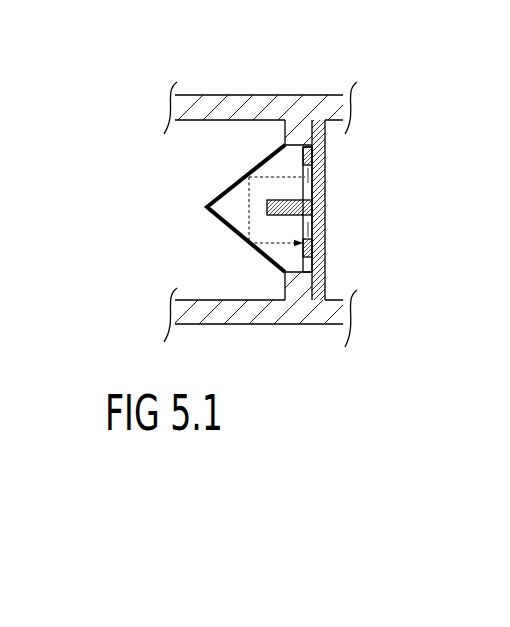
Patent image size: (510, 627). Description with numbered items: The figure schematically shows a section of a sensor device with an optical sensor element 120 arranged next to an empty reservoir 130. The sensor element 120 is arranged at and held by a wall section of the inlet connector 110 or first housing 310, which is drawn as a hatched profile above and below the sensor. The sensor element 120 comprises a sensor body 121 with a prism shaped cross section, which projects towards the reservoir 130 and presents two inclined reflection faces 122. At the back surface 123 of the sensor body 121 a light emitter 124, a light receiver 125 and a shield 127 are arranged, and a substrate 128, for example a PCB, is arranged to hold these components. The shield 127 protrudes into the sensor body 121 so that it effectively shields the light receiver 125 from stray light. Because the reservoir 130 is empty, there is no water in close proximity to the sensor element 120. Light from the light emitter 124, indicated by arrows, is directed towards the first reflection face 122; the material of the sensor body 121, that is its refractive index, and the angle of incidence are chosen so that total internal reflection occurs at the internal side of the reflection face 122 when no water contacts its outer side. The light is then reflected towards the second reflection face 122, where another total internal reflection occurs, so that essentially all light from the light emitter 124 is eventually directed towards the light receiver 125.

The inlet connector 110 is at (260, 77).
The first housing 310 is at (228, 86).
The optical sensor element 120 is at (255, 183).
The sensor body 121 is at (277, 133).
The reflection face 122 is at (240, 247).
The back surface 123 is at (318, 216).
The light emitter 124 is at (324, 152).
The light receiver 125 is at (324, 276).
The shield 127 is at (290, 192).
The substrate 128 is at (333, 250).
The reservoir 130 is at (57, 205).